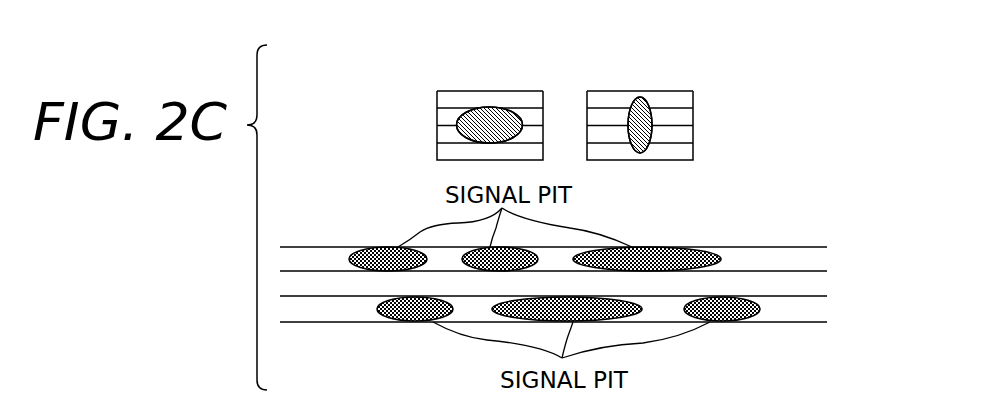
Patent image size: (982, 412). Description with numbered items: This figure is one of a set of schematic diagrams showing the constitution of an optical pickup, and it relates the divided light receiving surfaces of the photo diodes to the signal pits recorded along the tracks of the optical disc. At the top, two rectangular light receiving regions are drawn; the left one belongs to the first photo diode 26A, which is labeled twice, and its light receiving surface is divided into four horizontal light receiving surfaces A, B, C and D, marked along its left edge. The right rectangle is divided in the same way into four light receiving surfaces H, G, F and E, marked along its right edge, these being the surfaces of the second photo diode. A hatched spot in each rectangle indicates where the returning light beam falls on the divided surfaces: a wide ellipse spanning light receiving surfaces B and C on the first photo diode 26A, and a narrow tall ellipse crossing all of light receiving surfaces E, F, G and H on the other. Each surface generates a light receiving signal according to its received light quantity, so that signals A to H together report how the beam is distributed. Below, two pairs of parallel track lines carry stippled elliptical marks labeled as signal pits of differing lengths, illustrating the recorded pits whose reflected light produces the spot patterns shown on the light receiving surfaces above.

The first photo diode 26A is at (566, 100).
The light receiving surface A is at (479, 93).
The light receiving surface B is at (479, 114).
The light receiving surface C is at (479, 135).
The light receiving surface D is at (479, 155).
The light receiving surface E is at (650, 155).
The light receiving surface F is at (650, 135).
The light receiving surface G is at (652, 114).
The light receiving surface H is at (651, 93).